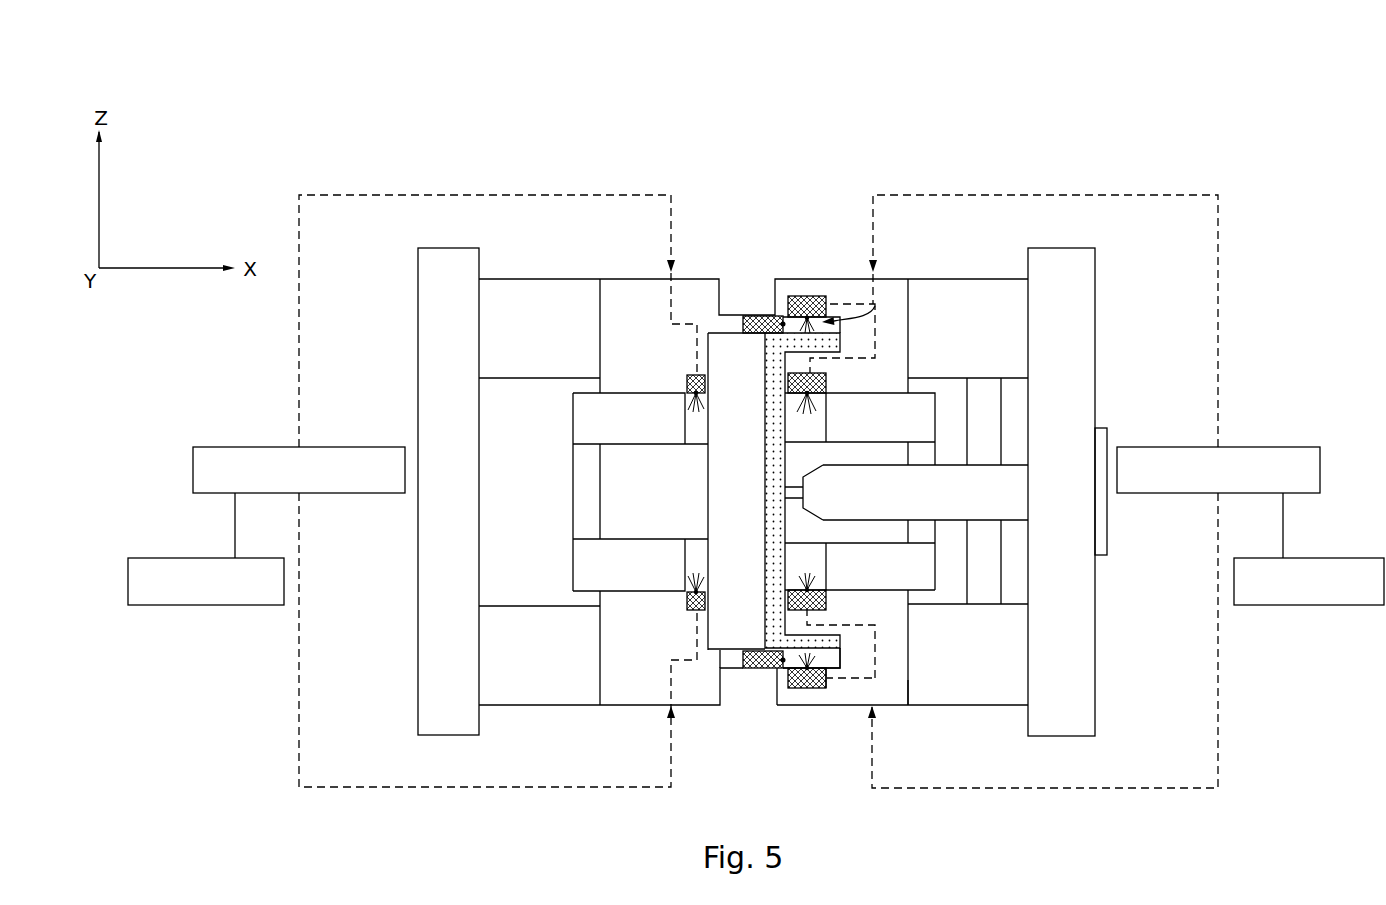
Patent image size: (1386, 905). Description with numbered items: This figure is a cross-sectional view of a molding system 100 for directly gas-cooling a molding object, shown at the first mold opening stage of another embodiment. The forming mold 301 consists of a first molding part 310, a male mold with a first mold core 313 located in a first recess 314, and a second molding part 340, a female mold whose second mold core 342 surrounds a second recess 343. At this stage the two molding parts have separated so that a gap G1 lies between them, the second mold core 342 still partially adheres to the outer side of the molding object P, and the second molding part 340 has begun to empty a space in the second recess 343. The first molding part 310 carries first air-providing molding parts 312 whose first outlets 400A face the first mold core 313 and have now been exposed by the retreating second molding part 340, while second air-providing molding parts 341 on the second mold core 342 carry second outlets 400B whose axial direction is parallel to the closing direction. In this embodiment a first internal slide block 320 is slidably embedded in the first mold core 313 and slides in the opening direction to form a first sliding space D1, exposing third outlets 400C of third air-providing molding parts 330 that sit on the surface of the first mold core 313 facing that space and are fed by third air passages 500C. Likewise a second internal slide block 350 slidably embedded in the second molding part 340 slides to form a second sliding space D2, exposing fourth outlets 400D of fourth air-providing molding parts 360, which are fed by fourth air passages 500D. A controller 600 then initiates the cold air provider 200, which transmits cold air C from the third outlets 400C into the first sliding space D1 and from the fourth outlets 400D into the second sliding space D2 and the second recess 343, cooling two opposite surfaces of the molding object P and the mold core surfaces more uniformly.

The molding system 100 is at (152, 79).
The cold air provider 200 is at (267, 447).
The controller 600 is at (152, 558).
The forming mold 301 is at (793, 100).
The second molding part 340 is at (630, 303).
The first molding part 310 is at (820, 287).
The second internal slide block 350 is at (590, 577).
The fourth air-providing molding part 360 is at (705, 598).
The first internal slide block 320 is at (878, 410).
The third air-providing molding part 330 is at (826, 393).
The first recess 314 is at (877, 306).
The first air-providing molding part 312 is at (805, 690).
The first mold core 313 is at (883, 687).
The second air-providing molding part 341 is at (757, 670).
The second mold core 342 is at (728, 662).
The second recess 343 is at (706, 662).
The first outlet 400A is at (820, 690).
The second outlet 400B is at (783, 662).
The third outlet 400C is at (826, 393).
The fourth outlet 400D is at (695, 588).
The third air passage 500C is at (877, 338).
The fourth air passage 500D is at (670, 672).
The cold air C is at (697, 395).
The molding object P is at (780, 478).
The first sliding space D1 is at (833, 451).
The second sliding space D2 is at (673, 406).
The gap G1 is at (775, 279).